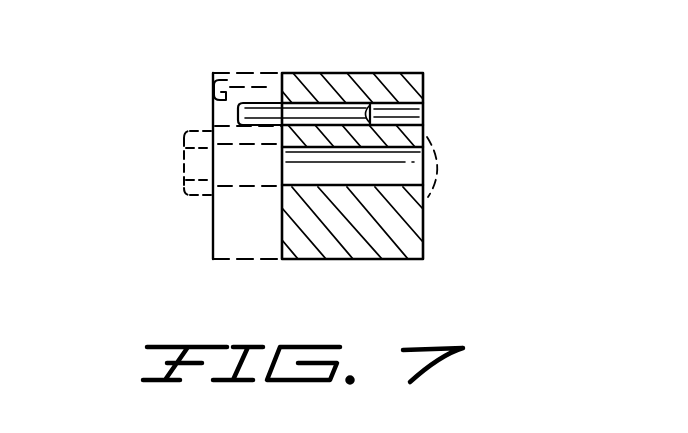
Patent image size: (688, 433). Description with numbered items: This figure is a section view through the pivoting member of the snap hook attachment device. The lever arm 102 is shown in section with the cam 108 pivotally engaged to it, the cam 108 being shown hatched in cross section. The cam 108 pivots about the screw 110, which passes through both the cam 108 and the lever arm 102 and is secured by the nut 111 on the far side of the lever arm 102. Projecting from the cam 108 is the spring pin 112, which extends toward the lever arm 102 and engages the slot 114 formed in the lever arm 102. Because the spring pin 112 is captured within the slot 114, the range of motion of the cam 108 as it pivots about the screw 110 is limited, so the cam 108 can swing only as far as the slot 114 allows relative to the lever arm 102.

The lever arm 102 is at (212, 238).
The cam 108 is at (425, 83).
The screw 110 is at (443, 163).
The nut 111 is at (184, 153).
The spring pin 112 is at (270, 105).
The slot 114 is at (207, 90).